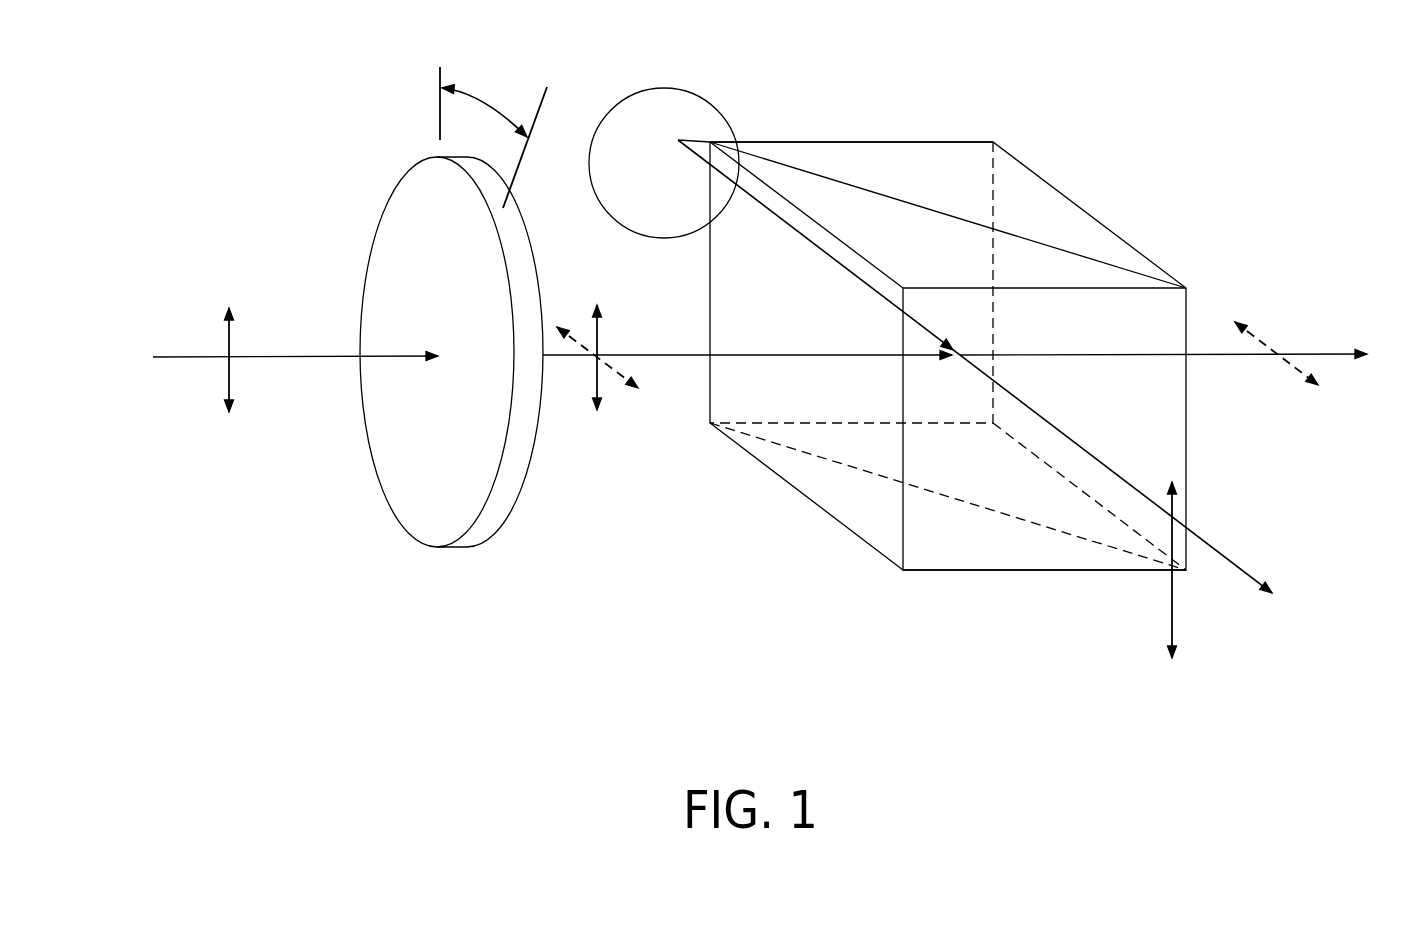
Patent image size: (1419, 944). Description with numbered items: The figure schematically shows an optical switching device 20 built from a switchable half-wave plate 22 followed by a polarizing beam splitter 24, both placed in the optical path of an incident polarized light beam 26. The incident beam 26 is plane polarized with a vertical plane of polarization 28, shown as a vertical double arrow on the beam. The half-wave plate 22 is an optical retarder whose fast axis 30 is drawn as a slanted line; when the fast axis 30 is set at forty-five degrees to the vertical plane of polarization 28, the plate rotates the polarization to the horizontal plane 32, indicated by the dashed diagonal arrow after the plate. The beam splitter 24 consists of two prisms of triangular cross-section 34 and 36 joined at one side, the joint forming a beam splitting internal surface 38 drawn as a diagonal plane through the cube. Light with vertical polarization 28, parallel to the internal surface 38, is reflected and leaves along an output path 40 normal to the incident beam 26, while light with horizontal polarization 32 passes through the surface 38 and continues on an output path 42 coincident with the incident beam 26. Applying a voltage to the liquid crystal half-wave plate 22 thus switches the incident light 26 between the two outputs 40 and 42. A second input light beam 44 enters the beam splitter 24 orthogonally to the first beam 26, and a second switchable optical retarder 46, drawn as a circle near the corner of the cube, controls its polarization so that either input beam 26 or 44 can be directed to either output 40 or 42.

The optical switching device 20 is at (282, 104).
The switchable half-wave plate 22 is at (525, 478).
The polarizing beam splitter 24 is at (1075, 200).
The incident polarized light beam 26 is at (298, 360).
The vertical plane of polarization 28 is at (437, 105).
The fast axis 30 is at (540, 112).
The horizontal plane of polarization 32 is at (618, 378).
The first prism 34 is at (946, 162).
The second prism 36 is at (946, 551).
The beam splitting internal surface 38 is at (772, 158).
The reflected output path 40 is at (1222, 555).
The transmitted output path 42 is at (1328, 358).
The second input light beam 44 is at (692, 145).
The second switchable optical retarder 46 is at (663, 88).